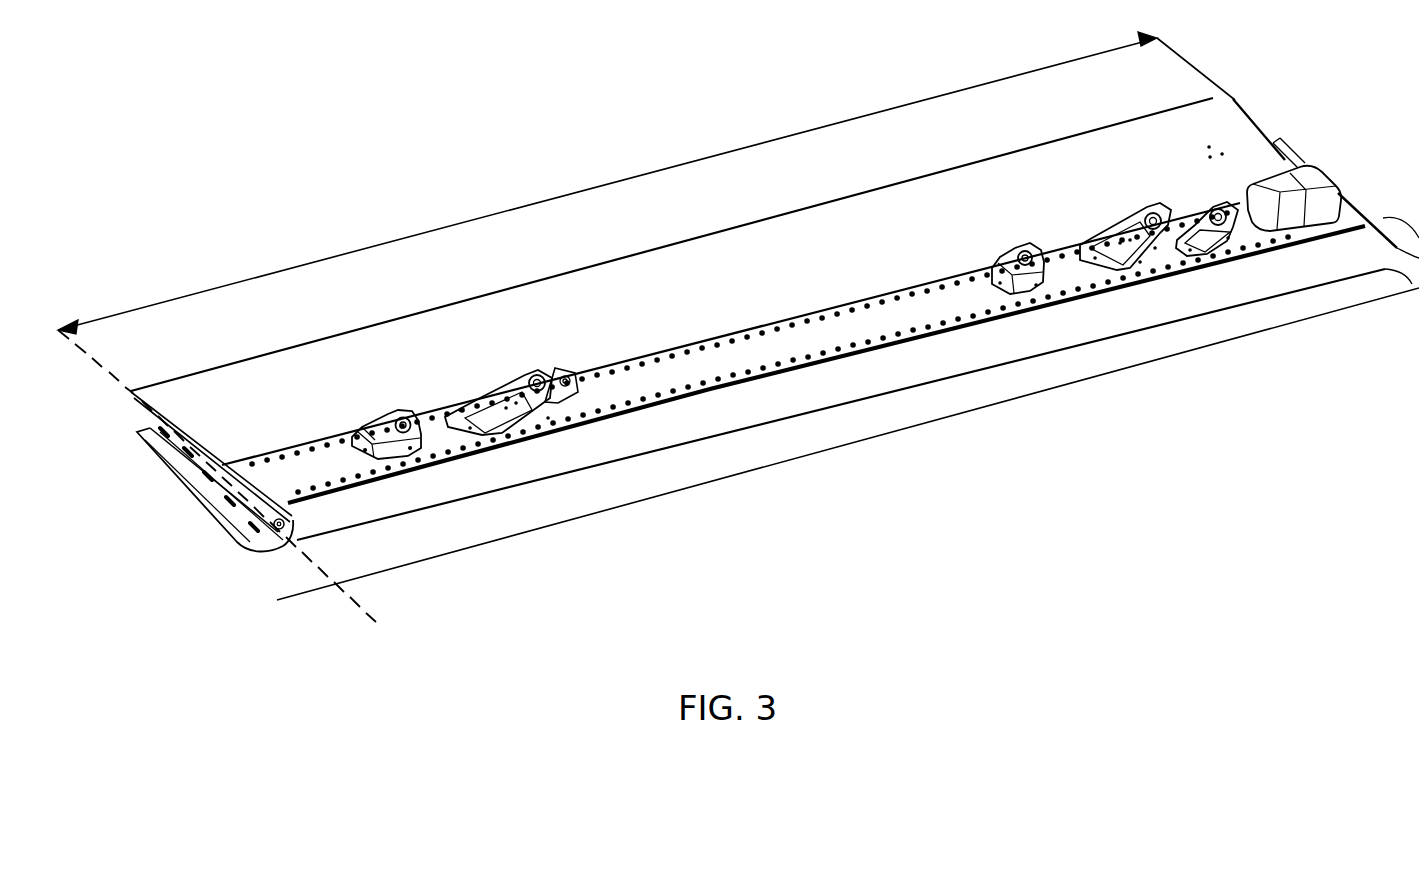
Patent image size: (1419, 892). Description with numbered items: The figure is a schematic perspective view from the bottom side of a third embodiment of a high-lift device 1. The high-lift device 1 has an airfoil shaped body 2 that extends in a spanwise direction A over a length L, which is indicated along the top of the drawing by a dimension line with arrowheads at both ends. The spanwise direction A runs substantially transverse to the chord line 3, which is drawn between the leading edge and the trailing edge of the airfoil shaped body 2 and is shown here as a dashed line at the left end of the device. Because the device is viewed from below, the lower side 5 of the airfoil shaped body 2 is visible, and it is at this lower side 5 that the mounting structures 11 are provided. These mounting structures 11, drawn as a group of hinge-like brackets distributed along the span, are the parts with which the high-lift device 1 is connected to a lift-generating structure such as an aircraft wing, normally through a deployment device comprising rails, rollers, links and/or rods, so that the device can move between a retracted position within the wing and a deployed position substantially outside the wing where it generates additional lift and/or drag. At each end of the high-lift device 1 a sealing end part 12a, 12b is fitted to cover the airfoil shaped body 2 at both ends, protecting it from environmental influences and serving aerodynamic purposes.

The high-lift device 1 is at (372, 184).
The airfoil shaped body 2 is at (288, 370).
The chord line 3 is at (360, 610).
The lower side 5 is at (718, 253).
The mounting structures 11 is at (415, 417).
The sealing end part 12a is at (216, 514).
The sealing end part 12b is at (1297, 150).
The length L is at (583, 189).
The spanwise direction A is at (1283, 328).